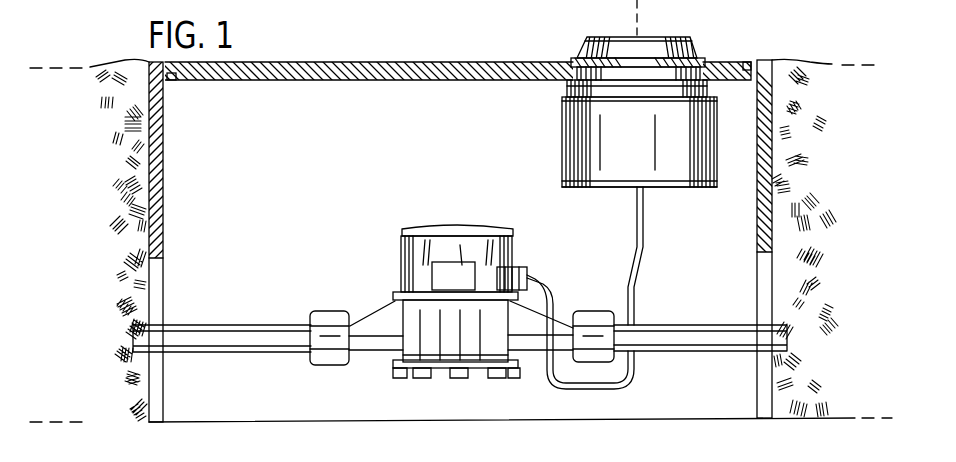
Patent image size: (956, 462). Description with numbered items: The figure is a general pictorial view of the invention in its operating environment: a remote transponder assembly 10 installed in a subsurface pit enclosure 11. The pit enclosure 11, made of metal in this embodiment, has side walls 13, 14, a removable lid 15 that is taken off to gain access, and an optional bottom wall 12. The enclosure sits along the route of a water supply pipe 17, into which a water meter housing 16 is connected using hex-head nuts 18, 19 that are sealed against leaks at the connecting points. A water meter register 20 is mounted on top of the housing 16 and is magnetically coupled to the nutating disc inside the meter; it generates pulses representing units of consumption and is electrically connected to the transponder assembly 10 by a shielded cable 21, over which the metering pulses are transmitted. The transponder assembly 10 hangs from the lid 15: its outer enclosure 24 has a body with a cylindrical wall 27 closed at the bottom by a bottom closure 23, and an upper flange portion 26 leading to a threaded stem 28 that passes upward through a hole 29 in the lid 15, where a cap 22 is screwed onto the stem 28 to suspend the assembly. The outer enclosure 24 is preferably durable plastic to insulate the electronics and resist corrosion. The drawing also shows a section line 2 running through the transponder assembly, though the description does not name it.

The wire 2 is at (652, 221).
The remote transponder assembly 10 is at (688, 23).
The subsurface pit enclosure 11 is at (446, 47).
The bottom wall 12 is at (218, 420).
The side wall 13 is at (163, 186).
The side wall 14 is at (758, 226).
The lid 15 is at (366, 62).
The water meter housing 16 is at (395, 363).
The water supply pipe 17 is at (206, 325).
The hex-head nut 18 is at (340, 311).
The hex-head nut 19 is at (600, 311).
The water meter register 20 is at (419, 212).
The cable 21 is at (642, 295).
The cap 22 is at (612, 33).
The bottom closure 23 is at (607, 190).
The outer enclosure 24 is at (530, 142).
The upper flange portion 26 is at (560, 82).
The cylindrical wall 27 is at (581, 155).
The threaded stem 28 is at (703, 57).
The hole 29 is at (578, 55).